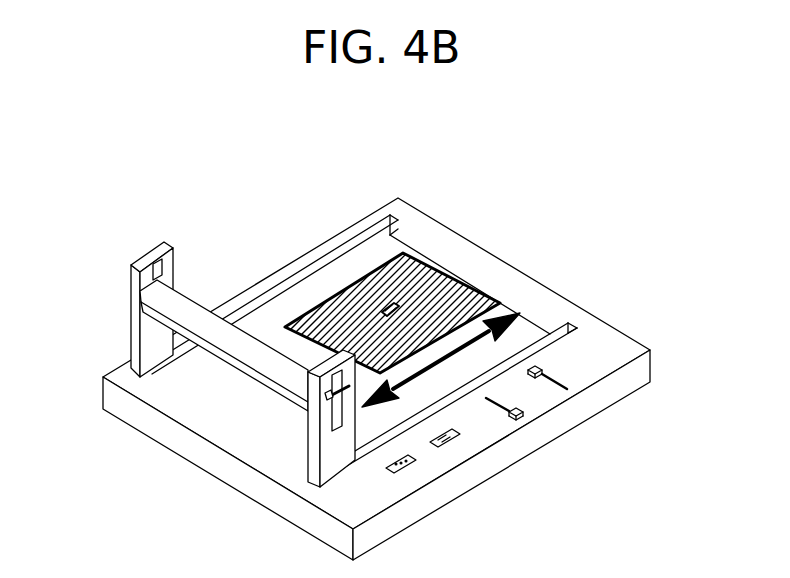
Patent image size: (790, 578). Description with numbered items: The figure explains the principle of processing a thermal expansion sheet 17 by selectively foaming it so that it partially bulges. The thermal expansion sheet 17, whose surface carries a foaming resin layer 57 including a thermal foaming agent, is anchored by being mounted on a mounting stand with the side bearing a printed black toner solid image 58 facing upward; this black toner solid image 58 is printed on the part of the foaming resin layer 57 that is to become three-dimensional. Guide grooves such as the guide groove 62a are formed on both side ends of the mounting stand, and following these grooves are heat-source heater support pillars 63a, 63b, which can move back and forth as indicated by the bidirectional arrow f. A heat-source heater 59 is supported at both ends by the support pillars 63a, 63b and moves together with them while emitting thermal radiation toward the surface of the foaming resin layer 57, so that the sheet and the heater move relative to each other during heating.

The heat-source heater 59 is at (185, 308).
The foaming resin layer 57 is at (383, 277).
The thermal expansion sheet 17 is at (332, 316).
The black toner solid image 58 is at (388, 303).
The guide groove 62a is at (360, 218).
The heat-source heater support pillar 63a is at (131, 367).
The heat-source heater support pillar 63b is at (308, 460).
The bidirectional arrow f is at (418, 374).